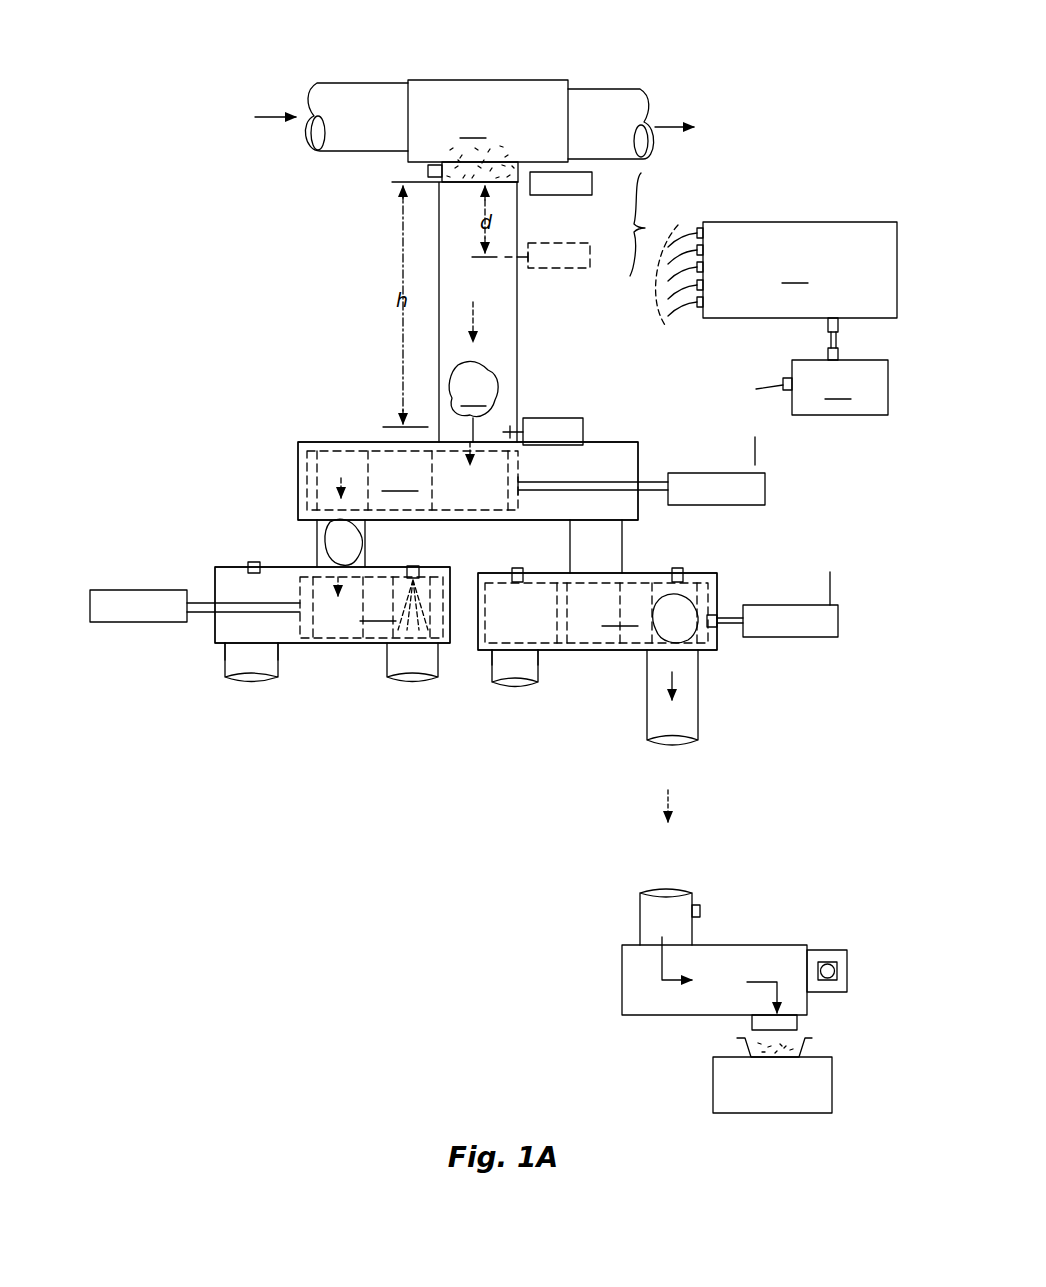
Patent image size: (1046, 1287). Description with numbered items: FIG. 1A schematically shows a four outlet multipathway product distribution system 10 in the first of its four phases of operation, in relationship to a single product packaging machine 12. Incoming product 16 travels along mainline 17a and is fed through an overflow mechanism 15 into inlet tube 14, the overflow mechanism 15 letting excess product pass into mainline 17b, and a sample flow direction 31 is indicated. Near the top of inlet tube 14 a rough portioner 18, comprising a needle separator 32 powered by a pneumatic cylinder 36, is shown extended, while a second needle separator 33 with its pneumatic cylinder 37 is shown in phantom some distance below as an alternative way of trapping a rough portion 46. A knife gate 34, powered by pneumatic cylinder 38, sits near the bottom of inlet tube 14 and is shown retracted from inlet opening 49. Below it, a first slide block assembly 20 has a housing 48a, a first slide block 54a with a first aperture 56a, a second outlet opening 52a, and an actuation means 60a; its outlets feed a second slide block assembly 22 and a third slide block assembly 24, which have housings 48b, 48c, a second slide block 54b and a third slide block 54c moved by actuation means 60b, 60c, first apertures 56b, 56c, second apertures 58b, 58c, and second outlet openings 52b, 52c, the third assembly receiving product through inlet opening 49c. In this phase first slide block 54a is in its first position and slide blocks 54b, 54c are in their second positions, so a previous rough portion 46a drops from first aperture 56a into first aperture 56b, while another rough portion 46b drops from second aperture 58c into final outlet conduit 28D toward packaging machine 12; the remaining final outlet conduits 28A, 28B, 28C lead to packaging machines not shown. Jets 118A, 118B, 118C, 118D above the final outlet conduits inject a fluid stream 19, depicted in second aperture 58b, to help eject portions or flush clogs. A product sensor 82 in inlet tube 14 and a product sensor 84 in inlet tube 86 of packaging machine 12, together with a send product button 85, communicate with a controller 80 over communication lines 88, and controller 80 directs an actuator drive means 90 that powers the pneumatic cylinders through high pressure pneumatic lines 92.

The multipathway product distribution system 10 is at (230, 285).
The product packaging machine 12 is at (555, 970).
The inlet tube 14 is at (503, 321).
The overflow mechanism 15 is at (488, 121).
The incoming product 16 is at (493, 147).
The mainline 17a is at (346, 94).
The mainline 17b is at (610, 100).
The rough portioner 18 is at (678, 228).
The fluid stream 19 is at (422, 587).
The first slide block assembly 20 is at (282, 419).
The second slide block assembly 22 is at (208, 544).
The third slide block assembly 24 is at (778, 577).
The final outlet conduit 28A is at (262, 677).
The final outlet conduit 28B is at (435, 680).
The final outlet conduit 28C is at (527, 685).
The final outlet conduit 28D is at (685, 723).
The sample flow direction 31 is at (445, 231).
The needle separator 32 is at (518, 186).
The second needle separator 33 is at (520, 270).
The knife gate 34 is at (518, 426).
The pneumatic cylinder 36 is at (578, 196).
The pneumatic cylinder 37 is at (586, 270).
The pneumatic cylinder 38 is at (553, 418).
The rough portion 46 is at (473, 359).
The previous rough portion 46a is at (325, 545).
The rough portion 46b is at (680, 626).
The housing 48a is at (627, 462).
The housing 48b is at (232, 588).
The housing 48c is at (490, 652).
The inlet opening 49 is at (465, 444).
The inlet opening 49c is at (598, 572).
The second outlet opening 52a is at (330, 512).
The second outlet opening 52b is at (248, 655).
The second outlet opening 52c is at (517, 652).
The first slide block 54a is at (468, 481).
The second slide block 54b is at (385, 655).
The third slide block 54c is at (680, 660).
The first aperture 56a is at (330, 460).
The first aperture 56b is at (317, 645).
The first aperture 56c is at (582, 630).
The second aperture 58b is at (432, 603).
The second aperture 58c is at (693, 580).
The actuation means 60a is at (753, 492).
The actuation means 60b is at (110, 612).
The actuation means 60c is at (805, 630).
The controller 80 is at (835, 366).
The product sensor 82 is at (436, 178).
The product sensor 84 is at (697, 905).
The send product button 85 is at (842, 958).
The inlet tube 86 is at (650, 917).
The communication lines 88 is at (428, 168).
The actuator drive means 90 is at (800, 270).
The high pressure pneumatic lines 92 is at (597, 184).
The jet 118A is at (254, 562).
The jet 118B is at (413, 565).
The jet 118C is at (520, 567).
The jet 118D is at (687, 568).